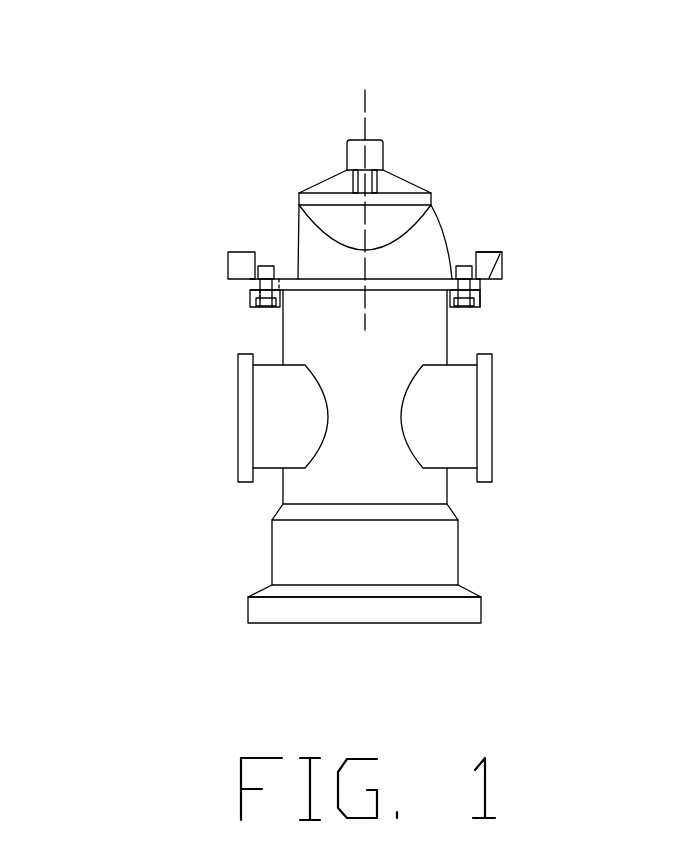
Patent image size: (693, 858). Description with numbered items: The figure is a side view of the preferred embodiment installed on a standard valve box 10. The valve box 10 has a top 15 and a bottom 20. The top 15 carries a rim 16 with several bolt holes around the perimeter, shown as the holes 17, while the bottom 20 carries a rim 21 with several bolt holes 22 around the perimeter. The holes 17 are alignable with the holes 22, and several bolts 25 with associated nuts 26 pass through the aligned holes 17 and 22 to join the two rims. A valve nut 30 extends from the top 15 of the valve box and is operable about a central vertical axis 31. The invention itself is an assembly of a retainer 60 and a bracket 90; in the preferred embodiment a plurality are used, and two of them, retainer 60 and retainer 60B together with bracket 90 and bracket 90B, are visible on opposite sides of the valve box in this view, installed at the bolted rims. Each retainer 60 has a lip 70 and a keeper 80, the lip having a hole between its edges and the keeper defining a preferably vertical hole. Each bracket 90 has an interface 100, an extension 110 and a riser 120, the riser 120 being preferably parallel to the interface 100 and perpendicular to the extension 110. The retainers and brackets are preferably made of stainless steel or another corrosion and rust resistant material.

The valve box 10 is at (445, 201).
The top 15 is at (412, 181).
The rim 16 is at (299, 277).
The holes 17 is at (283, 276).
The bottom 20 is at (238, 422).
The rim 21 is at (300, 289).
The bolt holes 22 is at (263, 305).
The bolts 25 is at (266, 271).
The nuts 26 is at (257, 304).
The valve nut 30 is at (385, 152).
The central vertical axis 31 is at (362, 107).
The retainer 60 is at (462, 278).
The retainer 60B is at (262, 262).
The lip 70 is at (460, 275).
The keeper 80 is at (480, 281).
The bracket 90 is at (517, 276).
The bracket 90B is at (228, 270).
The interface 100 is at (480, 303).
The extension 110 is at (500, 260).
The riser 120 is at (503, 264).